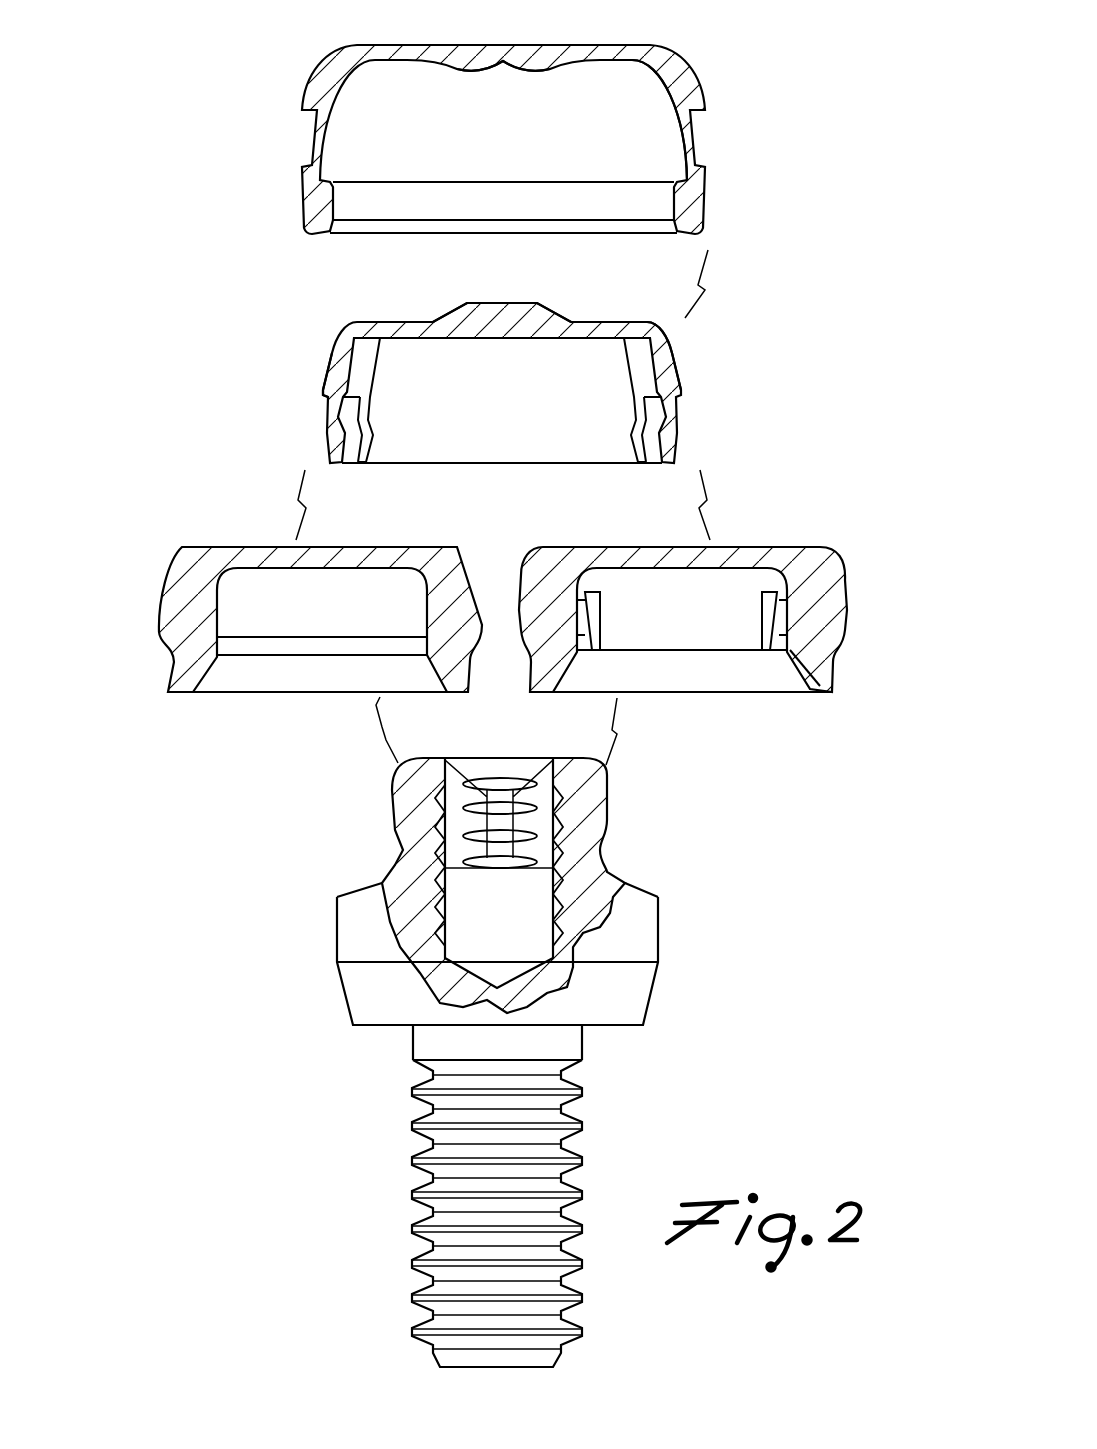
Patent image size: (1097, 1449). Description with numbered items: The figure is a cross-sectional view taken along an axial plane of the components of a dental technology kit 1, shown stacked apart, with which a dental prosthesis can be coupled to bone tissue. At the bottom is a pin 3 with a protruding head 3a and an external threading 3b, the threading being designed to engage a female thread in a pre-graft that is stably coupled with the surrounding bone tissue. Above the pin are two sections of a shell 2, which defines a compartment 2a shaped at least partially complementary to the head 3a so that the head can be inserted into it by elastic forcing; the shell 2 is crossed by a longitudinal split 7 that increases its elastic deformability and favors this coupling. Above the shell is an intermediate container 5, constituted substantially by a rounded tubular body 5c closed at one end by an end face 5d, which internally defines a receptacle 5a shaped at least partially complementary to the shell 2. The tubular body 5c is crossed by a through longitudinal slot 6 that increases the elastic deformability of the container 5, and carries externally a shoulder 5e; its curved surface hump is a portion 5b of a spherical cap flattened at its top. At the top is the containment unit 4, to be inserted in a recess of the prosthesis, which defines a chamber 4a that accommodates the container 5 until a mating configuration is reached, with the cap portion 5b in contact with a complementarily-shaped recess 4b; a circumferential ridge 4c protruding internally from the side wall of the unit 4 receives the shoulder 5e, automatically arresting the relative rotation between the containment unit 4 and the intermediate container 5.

The dental technology kit 1 is at (178, 245).
The shell 2 is at (501, 636).
The compartment 2a is at (327, 605).
The pin 3 is at (518, 1062).
The protruding head 3a is at (380, 799).
The external threading 3b is at (430, 1222).
The containment unit 4 is at (552, 148).
The chamber 4a is at (452, 135).
The recess 4b is at (505, 63).
The circumferential ridge 4c is at (612, 200).
The intermediate container 5 is at (503, 391).
The receptacle 5a is at (500, 395).
The portion of a spherical cap 5b is at (553, 310).
The rounded tubular body 5c is at (678, 378).
The end face 5d is at (405, 325).
The shoulder 5e is at (325, 406).
The through longitudinal slot 6 is at (345, 415).
The longitudinal split 7 is at (594, 640).